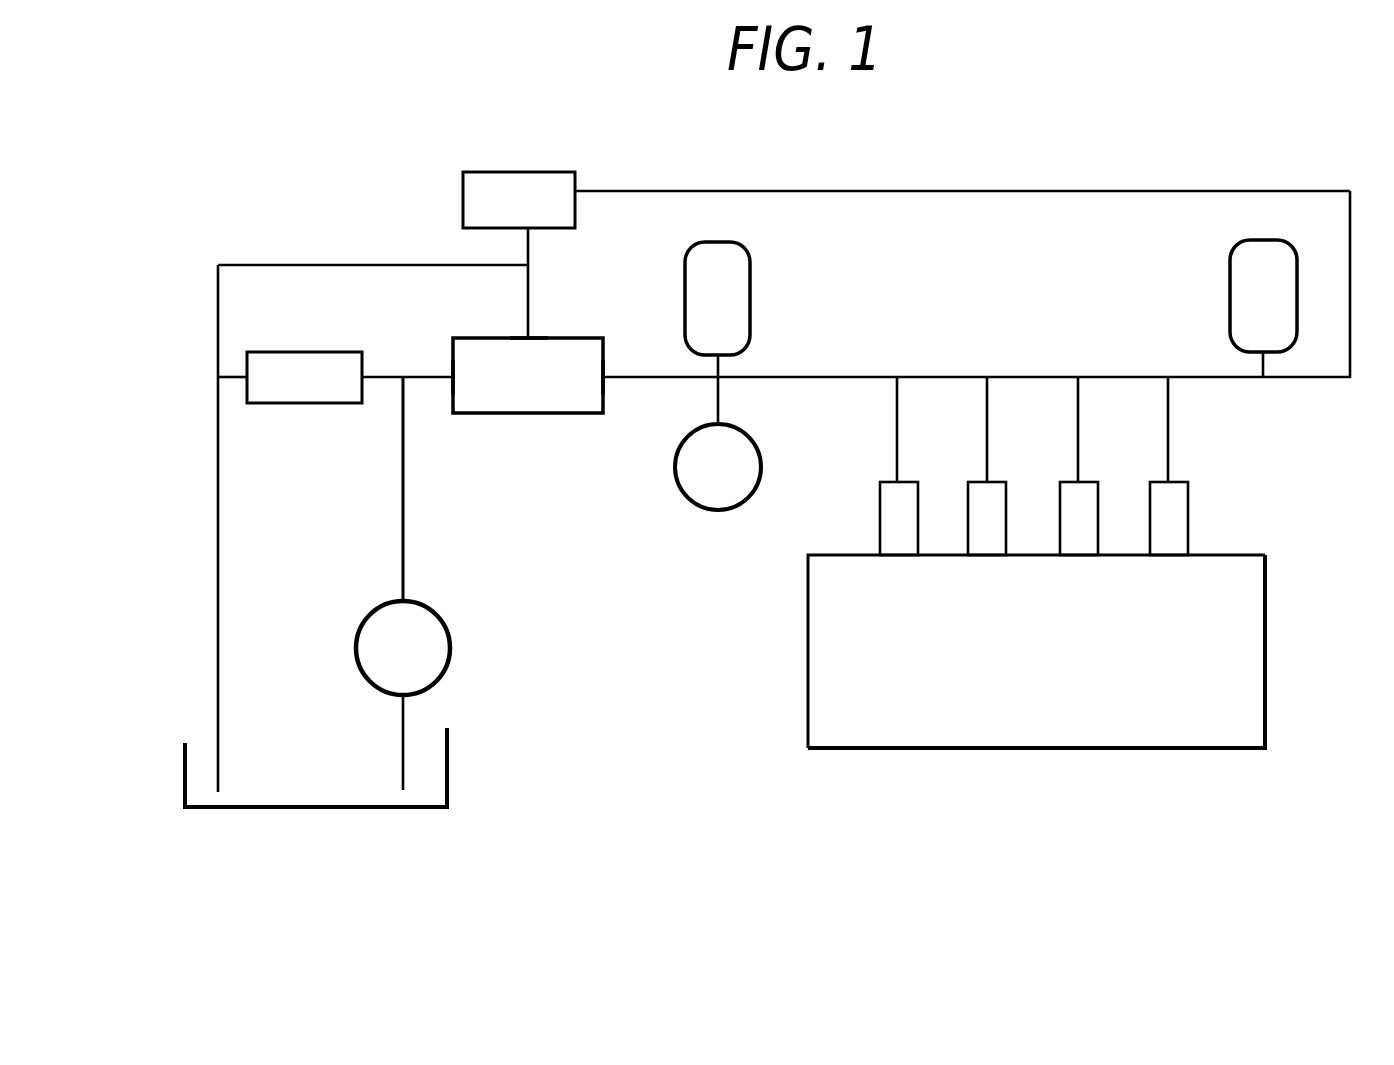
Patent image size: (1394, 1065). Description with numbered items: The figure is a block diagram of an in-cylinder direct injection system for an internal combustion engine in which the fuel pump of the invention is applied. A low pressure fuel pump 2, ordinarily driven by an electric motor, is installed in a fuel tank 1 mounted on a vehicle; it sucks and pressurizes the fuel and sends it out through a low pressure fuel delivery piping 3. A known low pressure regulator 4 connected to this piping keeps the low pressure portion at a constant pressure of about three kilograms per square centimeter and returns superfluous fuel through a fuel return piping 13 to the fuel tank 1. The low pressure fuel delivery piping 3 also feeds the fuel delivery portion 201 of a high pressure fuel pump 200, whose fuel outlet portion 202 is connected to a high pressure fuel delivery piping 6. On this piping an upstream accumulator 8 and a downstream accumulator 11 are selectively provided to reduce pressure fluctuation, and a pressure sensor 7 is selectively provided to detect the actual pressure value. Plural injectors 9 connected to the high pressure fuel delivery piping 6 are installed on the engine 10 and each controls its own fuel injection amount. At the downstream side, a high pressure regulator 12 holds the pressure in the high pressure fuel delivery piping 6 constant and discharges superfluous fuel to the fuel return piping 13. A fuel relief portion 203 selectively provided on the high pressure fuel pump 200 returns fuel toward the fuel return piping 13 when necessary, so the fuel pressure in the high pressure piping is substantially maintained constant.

The fuel tank 1 is at (334, 808).
The low pressure fuel pump 2 is at (452, 656).
The low pressure fuel delivery piping 3 is at (404, 577).
The low pressure regulator 4 is at (290, 403).
The high pressure fuel delivery piping 6 is at (662, 380).
The pressure sensor 7 is at (698, 509).
The upstream accumulator 8 is at (752, 318).
The injectors 9 is at (919, 482).
The engine 10 is at (1266, 644).
The downstream accumulator 11 is at (1230, 286).
The high pressure regulator 12 is at (523, 171).
The fuel return piping 13 is at (219, 642).
The high pressure fuel pump 200 is at (528, 413).
The fuel delivery portion 201 is at (452, 376).
The fuel outlet portion 202 is at (605, 372).
The fuel relief portion 203 is at (537, 337).